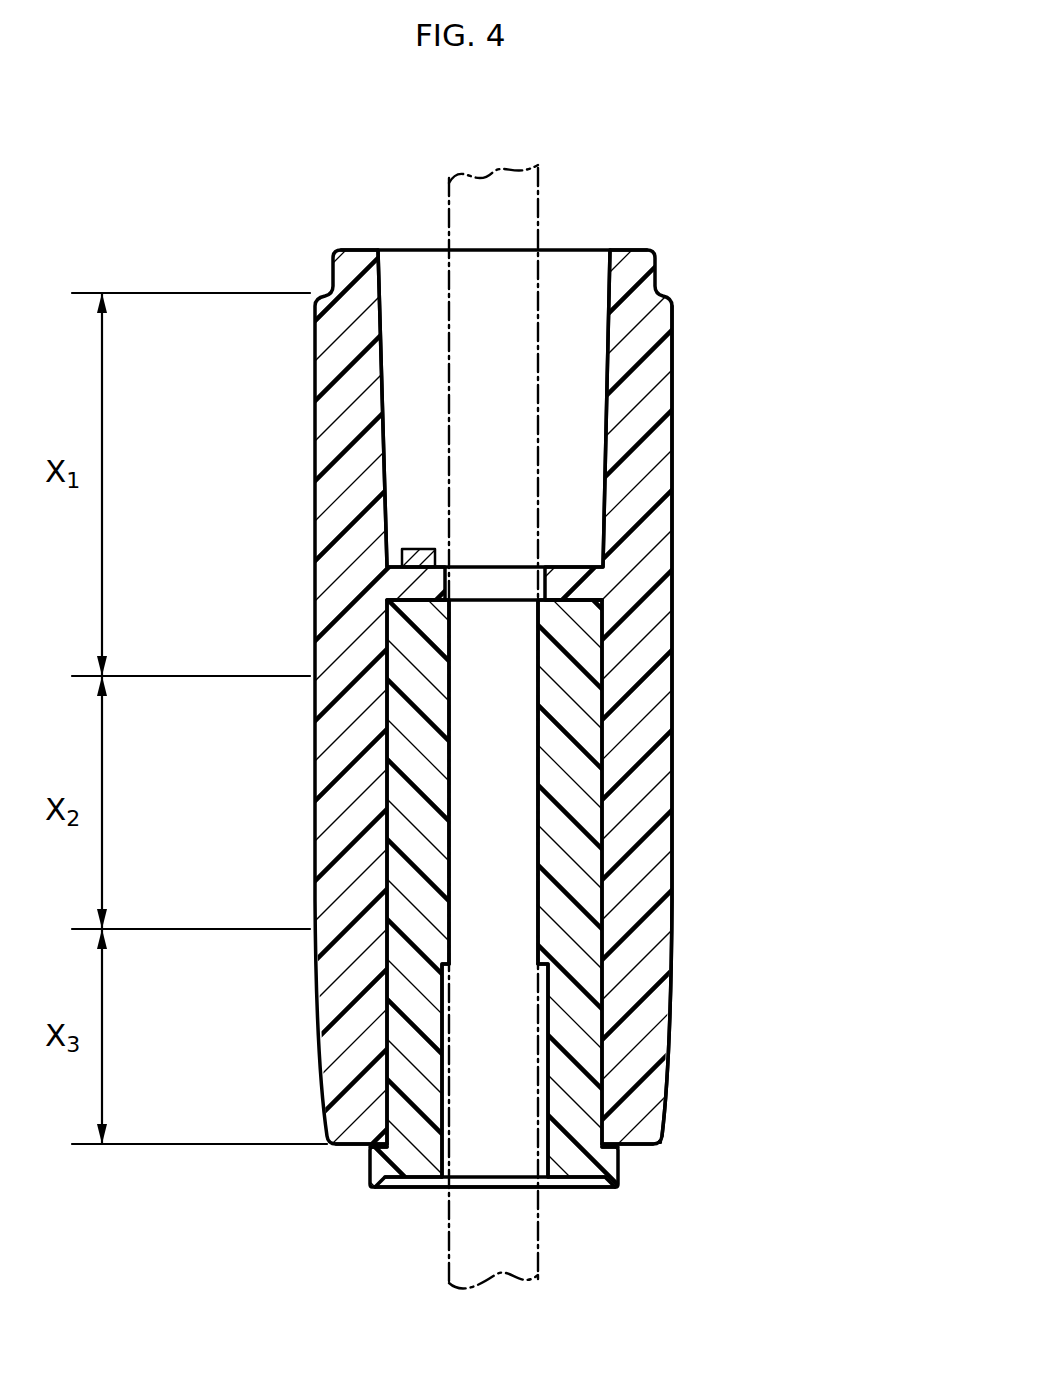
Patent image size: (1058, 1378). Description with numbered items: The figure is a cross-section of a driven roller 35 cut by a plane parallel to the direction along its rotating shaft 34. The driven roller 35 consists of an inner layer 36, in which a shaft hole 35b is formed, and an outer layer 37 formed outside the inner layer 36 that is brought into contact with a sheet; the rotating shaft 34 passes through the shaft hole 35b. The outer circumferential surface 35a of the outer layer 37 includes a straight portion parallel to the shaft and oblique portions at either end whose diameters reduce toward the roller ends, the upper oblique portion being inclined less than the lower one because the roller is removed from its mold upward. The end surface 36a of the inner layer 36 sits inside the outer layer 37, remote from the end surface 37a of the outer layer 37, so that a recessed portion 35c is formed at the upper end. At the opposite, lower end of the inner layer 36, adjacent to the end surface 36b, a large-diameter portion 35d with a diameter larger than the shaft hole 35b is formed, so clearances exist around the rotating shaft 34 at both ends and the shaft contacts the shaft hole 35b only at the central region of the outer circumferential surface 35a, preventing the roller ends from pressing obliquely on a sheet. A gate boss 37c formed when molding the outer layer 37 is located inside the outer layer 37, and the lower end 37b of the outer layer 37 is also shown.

The rotating shaft 34 is at (446, 192).
The driven roller 35 is at (832, 246).
The outer circumferential surface 35a is at (673, 475).
The shaft hole 35b is at (518, 882).
The recessed portion 35c is at (563, 283).
The large-diameter portion 35d is at (515, 1040).
The inner layer 36 is at (575, 776).
The end surface of the inner layer 36a is at (578, 598).
The end surface of the inner layer 36b is at (587, 1185).
The outer layer 37 is at (662, 672).
The end surface of the outer layer 37a is at (630, 250).
The lower end of outer sleeve 37b is at (645, 1147).
The gate boss 37c is at (418, 548).